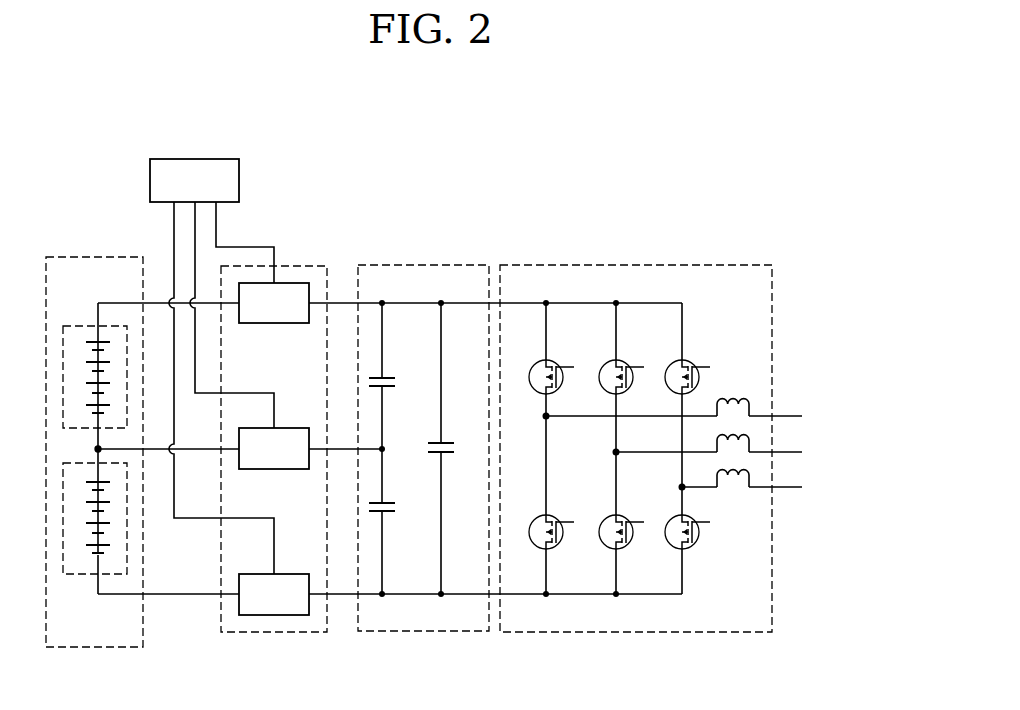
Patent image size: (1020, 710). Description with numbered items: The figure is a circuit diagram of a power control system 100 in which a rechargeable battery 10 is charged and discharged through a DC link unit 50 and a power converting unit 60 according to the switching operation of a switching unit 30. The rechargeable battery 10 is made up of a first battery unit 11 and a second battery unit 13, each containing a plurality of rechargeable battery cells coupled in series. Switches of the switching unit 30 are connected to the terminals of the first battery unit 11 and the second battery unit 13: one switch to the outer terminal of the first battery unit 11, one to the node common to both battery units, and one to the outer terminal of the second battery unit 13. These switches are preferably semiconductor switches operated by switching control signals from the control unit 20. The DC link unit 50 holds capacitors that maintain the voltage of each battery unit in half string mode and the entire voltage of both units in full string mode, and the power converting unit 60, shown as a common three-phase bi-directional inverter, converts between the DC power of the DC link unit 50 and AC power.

The power control system 100 is at (542, 186).
The rechargeable battery 10 is at (103, 648).
The first battery unit 11 is at (78, 326).
The second battery unit 13 is at (73, 576).
The control unit 20 is at (212, 366).
The switching unit 30 is at (283, 633).
The DC link unit 50 is at (428, 632).
The power converting unit 60 is at (620, 633).